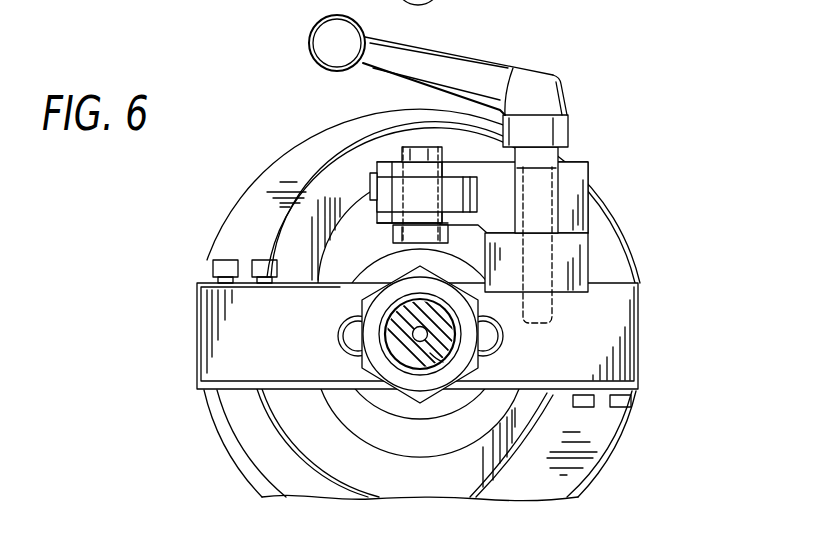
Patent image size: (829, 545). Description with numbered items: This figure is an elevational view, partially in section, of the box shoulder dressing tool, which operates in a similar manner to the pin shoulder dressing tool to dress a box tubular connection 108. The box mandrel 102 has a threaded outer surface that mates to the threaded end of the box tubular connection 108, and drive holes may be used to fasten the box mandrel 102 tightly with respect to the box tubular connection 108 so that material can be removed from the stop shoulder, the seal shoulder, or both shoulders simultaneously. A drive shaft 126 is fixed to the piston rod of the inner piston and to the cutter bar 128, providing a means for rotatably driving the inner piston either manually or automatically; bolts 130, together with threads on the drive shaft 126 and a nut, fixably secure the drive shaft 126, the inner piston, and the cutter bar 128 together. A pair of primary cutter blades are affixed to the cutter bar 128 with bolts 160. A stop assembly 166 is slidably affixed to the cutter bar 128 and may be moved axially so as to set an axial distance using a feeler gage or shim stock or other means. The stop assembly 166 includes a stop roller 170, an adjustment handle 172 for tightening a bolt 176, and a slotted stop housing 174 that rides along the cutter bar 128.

The box mandrel 102 is at (298, 247).
The box tubular connection 108 is at (603, 267).
The drive shaft 126 is at (440, 354).
The cutter bar 128 is at (618, 322).
The bolts 130 is at (338, 336).
The bolts 160 is at (622, 406).
The stop assembly 166 is at (616, 85).
The stop roller 170 is at (373, 190).
The adjustment handle 172 is at (460, 67).
The slotted stop housing 174 is at (575, 177).
The bolt 176 is at (543, 257).